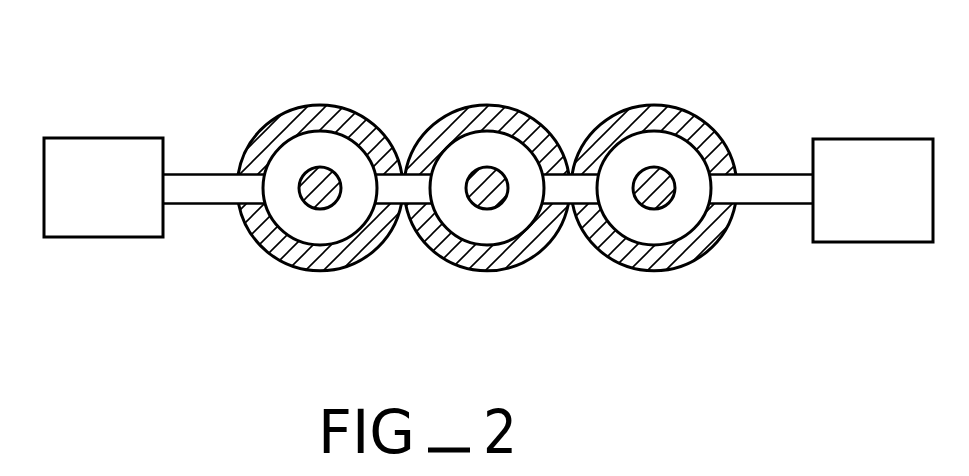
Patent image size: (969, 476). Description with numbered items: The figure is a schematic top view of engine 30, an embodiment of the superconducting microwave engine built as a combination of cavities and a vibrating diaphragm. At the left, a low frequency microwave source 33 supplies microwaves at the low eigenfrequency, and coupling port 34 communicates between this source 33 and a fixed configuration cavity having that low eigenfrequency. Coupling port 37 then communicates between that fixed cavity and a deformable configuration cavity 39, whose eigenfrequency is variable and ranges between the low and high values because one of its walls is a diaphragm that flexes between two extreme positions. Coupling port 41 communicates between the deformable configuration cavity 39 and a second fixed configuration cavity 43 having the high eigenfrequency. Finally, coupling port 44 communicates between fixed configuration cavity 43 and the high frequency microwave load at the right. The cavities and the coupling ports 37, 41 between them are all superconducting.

The engine 30 is at (526, 62).
The low frequency microwave source 33 is at (111, 199).
The coupling port 34 is at (198, 187).
The coupling port 37 is at (388, 185).
The deformable configuration cavity 39 is at (480, 235).
The coupling port 41 is at (557, 187).
The fixed configuration cavity 43 is at (650, 232).
The coupling port 44 is at (774, 195).